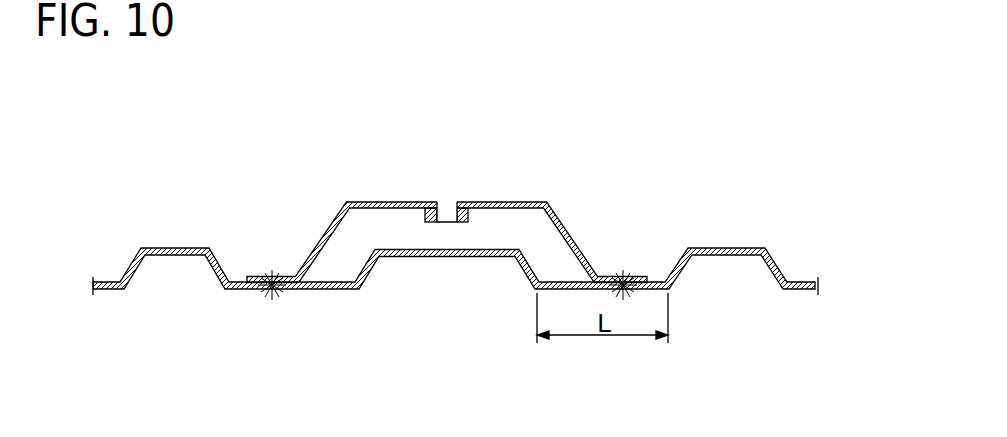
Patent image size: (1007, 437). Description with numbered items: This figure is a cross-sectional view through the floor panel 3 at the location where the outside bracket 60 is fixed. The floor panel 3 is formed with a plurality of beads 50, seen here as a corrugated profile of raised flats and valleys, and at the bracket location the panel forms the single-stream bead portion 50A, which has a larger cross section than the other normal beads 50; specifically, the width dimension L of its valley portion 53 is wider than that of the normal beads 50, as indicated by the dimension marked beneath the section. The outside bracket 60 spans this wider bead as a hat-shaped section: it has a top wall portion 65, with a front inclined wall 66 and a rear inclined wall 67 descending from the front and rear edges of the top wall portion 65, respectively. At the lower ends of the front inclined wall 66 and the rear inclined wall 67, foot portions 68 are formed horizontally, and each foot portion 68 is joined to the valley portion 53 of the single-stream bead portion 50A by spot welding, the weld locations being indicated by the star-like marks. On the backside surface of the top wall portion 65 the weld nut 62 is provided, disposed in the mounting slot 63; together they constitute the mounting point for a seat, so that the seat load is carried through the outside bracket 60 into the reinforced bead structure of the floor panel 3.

The floor panel 3 is at (806, 282).
The beads 50 is at (167, 248).
The single-stream bead portion 50A is at (388, 255).
The valley portion 53 is at (322, 283).
The outside bracket 60 is at (369, 202).
The weld nut 62 is at (466, 210).
The mounting slot 63 is at (450, 201).
The top wall portion 65 is at (402, 202).
The front inclined wall 66 is at (334, 230).
The rear inclined wall 67 is at (563, 228).
The foot portions 68 is at (262, 277).